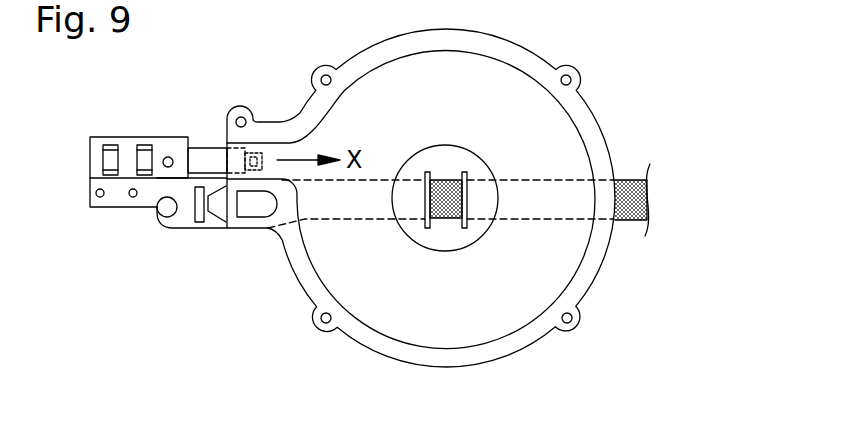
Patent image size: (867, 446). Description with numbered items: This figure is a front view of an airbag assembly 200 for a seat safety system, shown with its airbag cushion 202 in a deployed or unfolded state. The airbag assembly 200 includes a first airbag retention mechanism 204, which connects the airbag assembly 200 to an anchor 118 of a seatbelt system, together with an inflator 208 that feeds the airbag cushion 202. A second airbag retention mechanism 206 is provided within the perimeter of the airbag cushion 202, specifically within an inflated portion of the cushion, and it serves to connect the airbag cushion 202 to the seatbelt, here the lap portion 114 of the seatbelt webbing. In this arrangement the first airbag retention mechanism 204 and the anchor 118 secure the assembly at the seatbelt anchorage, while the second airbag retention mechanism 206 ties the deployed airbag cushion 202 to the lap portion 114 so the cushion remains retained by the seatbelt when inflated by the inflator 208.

The airbag assembly 200 is at (556, 33).
The airbag cushion 202 is at (535, 285).
The first airbag retention mechanism 204 is at (145, 192).
The second airbag retention mechanism 206 is at (451, 178).
The inflator 208 is at (203, 157).
The lap portion 114 is at (649, 201).
The anchor 118 is at (185, 219).